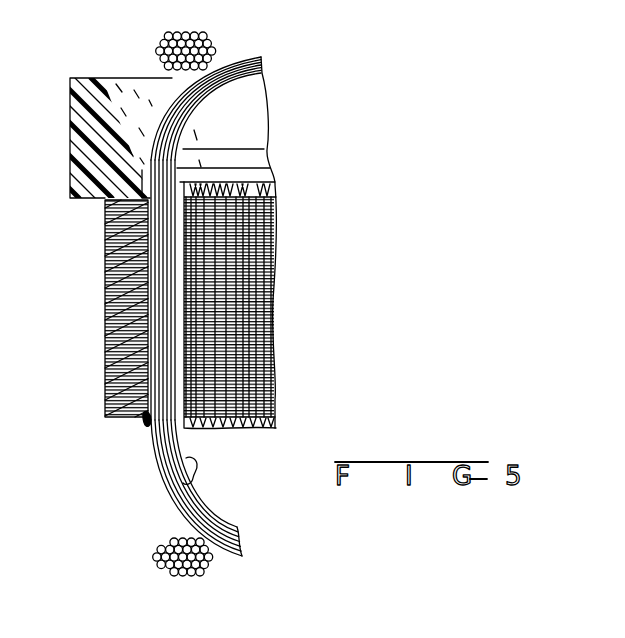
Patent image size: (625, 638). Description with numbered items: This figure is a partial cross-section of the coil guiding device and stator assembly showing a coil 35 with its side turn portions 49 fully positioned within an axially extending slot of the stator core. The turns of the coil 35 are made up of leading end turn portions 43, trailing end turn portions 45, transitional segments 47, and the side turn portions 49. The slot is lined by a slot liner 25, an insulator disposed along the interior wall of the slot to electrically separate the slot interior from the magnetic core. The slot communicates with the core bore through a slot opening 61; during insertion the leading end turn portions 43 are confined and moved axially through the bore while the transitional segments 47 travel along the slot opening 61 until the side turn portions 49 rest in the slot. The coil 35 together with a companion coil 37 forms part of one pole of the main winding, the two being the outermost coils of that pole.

The slot liner 25 is at (142, 398).
The coil 35 is at (168, 503).
The coil 37 is at (170, 40).
The leading end turn portion 43 is at (231, 557).
The trailing end turn portion 45 is at (227, 55).
The transitional segment 47 is at (190, 472).
The side turn portion 49 is at (160, 342).
The slot opening 61 is at (210, 336).